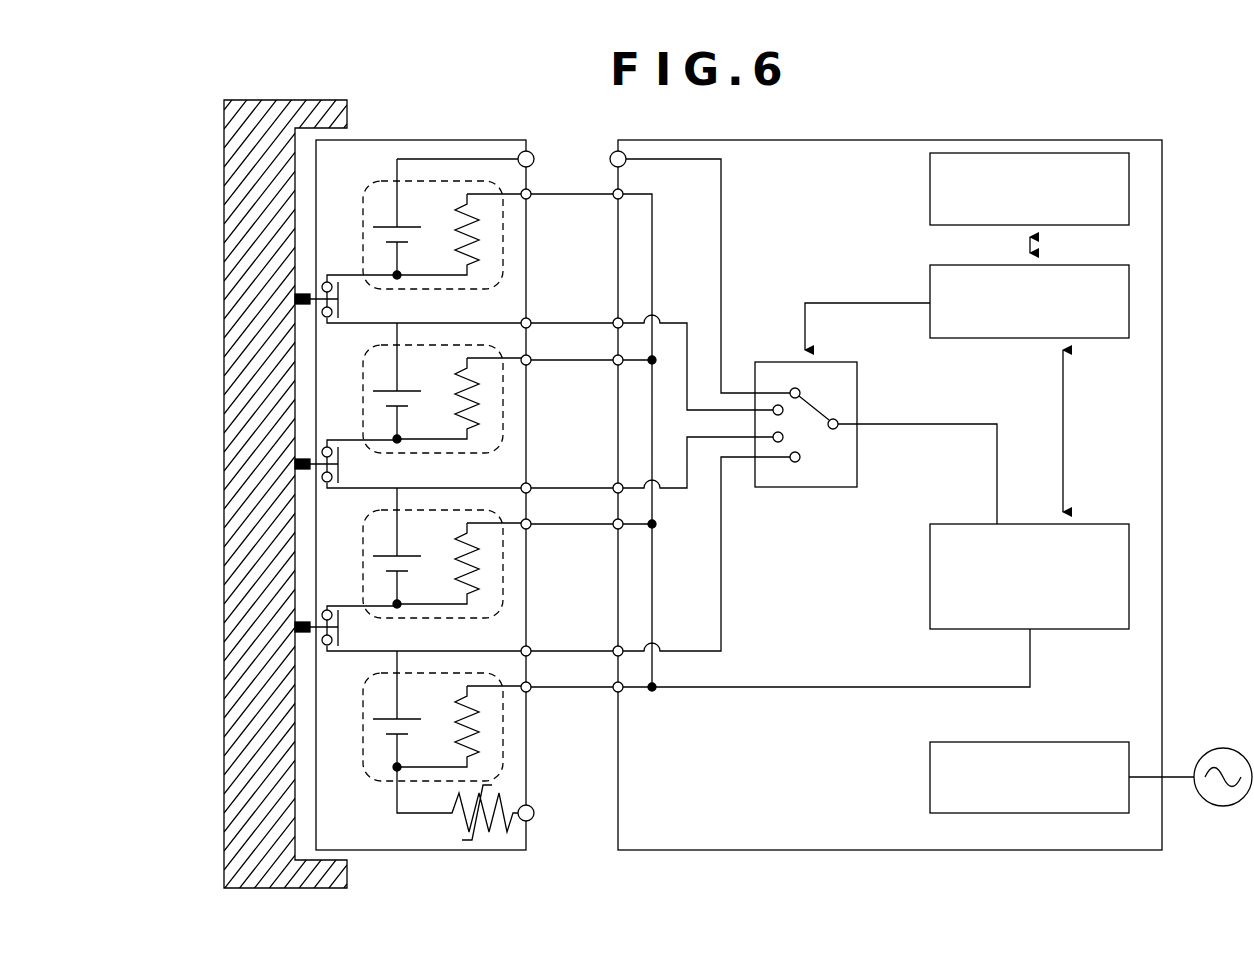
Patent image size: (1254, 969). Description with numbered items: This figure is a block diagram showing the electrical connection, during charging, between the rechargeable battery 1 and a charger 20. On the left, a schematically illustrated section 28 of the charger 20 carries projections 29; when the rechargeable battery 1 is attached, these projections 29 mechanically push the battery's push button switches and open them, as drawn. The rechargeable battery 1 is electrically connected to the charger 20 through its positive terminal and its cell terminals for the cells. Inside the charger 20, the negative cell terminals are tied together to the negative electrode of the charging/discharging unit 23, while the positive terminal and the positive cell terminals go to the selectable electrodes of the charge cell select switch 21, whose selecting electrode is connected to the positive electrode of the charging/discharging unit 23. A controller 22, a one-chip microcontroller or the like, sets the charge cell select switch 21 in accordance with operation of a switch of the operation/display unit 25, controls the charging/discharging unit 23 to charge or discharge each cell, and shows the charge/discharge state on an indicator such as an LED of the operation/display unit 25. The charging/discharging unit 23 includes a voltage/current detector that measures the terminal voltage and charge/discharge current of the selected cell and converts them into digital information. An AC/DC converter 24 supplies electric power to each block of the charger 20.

The rechargeable battery 1 is at (423, 140).
The charger 20 is at (1099, 142).
The charge cell select switch 21 is at (858, 393).
The controller 22 is at (930, 282).
The charging/discharging unit 23 is at (930, 576).
The AC/DC converter 24 is at (930, 776).
The operation/display unit 25 is at (930, 188).
The section of the charger 28 is at (223, 797).
The projections 29 is at (295, 627).